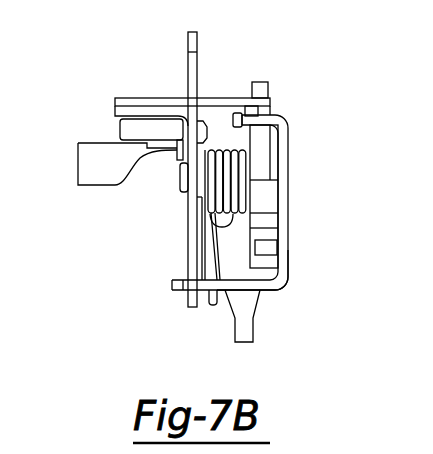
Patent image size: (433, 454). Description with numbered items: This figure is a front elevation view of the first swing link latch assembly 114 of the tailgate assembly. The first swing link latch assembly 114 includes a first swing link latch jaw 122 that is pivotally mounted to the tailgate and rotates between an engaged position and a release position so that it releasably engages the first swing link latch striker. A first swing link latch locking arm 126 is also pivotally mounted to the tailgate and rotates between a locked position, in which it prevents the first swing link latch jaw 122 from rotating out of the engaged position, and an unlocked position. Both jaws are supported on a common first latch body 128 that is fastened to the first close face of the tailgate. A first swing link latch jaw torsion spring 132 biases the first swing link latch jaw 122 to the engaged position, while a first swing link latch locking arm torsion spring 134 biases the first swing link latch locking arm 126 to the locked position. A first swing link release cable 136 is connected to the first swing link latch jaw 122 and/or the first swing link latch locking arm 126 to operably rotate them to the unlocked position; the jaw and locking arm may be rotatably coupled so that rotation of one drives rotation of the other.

The first swing link latch assembly 114 is at (352, 105).
The first swing link latch jaw 122 is at (267, 168).
The first swing link latch locking arm 126 is at (266, 90).
The common first latch body 128 is at (285, 279).
The first swing link latch jaw torsion spring 132 is at (213, 227).
The first swing link latch locking arm torsion spring 134 is at (280, 142).
The first swing link release cable 136 is at (133, 128).